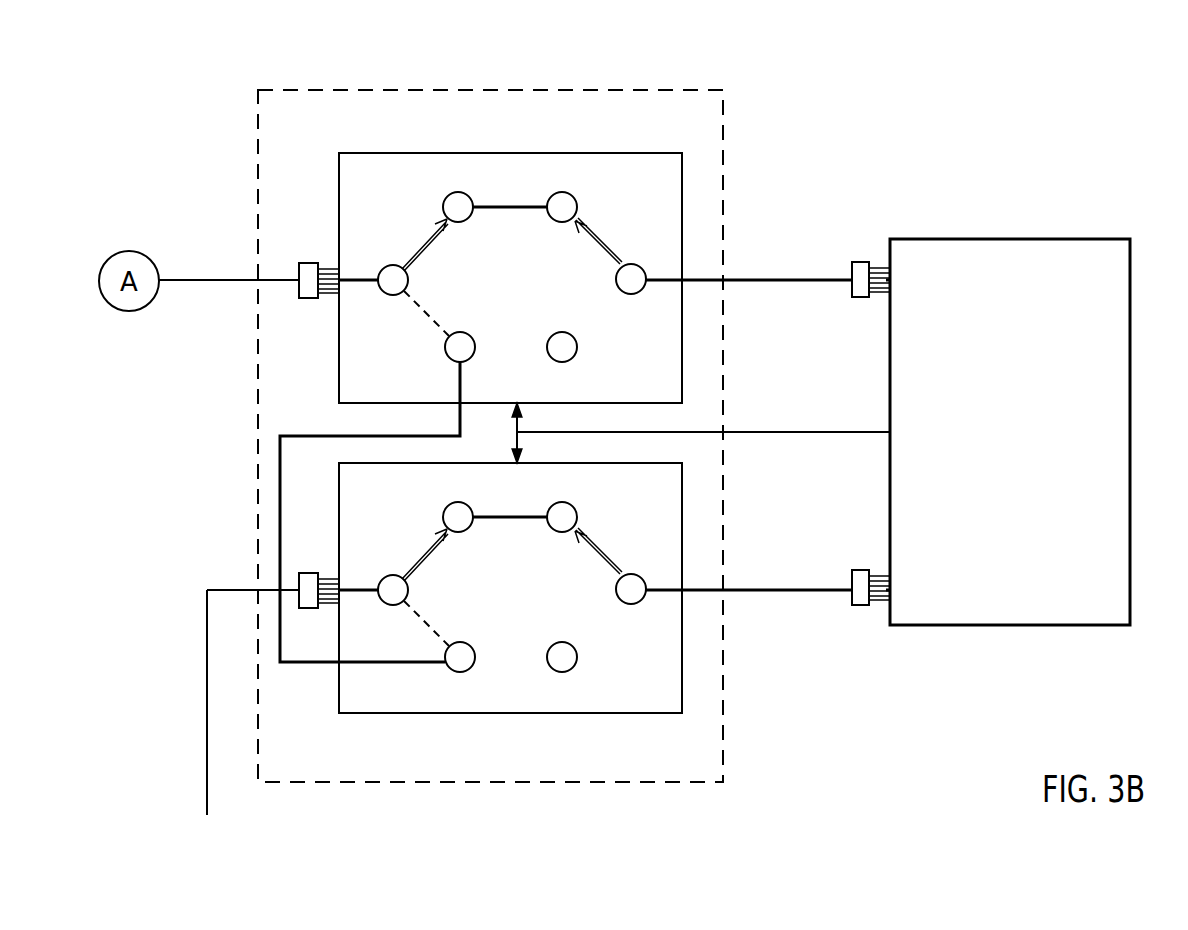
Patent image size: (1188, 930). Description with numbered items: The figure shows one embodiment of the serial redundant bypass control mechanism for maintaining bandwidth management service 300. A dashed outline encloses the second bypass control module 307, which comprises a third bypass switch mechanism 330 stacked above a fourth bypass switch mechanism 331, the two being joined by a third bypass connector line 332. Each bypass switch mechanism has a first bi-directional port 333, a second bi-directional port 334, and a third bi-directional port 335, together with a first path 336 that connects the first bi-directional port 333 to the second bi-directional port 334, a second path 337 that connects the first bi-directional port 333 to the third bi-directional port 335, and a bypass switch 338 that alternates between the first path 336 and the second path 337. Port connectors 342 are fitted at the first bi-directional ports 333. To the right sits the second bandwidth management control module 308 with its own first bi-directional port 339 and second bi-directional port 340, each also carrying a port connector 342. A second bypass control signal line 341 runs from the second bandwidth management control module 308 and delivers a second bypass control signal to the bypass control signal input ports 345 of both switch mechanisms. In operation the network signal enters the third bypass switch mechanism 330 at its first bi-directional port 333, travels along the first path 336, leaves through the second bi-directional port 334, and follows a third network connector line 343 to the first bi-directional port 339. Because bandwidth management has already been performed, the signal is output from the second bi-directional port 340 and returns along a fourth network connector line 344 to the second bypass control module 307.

The serial redundant bypass control mechanism for maintaining bandwidth management s 300 is at (180, 98).
The second bypass control module 307 is at (570, 90).
The second bandwidth management control module 308 is at (1060, 239).
The third bypass switch mechanism 330 is at (682, 185).
The fourth bypass switch mechanism 331 is at (682, 643).
The third bypass connector line 332 is at (280, 523).
The first bi-directional port 333 is at (342, 283).
The second bi-directional port 334 is at (677, 277).
The third bi-directional port 335 is at (457, 398).
The first path 336 is at (530, 211).
The second path 337 is at (442, 327).
The bypass switch 338 is at (417, 248).
The first bi-directional port 339 is at (890, 277).
The second bi-directional port 340 is at (890, 587).
The second bypass control signal line 341 is at (815, 431).
The port connector 342 is at (307, 262).
The third network connector line 343 is at (815, 282).
The fourth network connector line 344 is at (815, 587).
The bypass control signal input port 345 is at (517, 403).